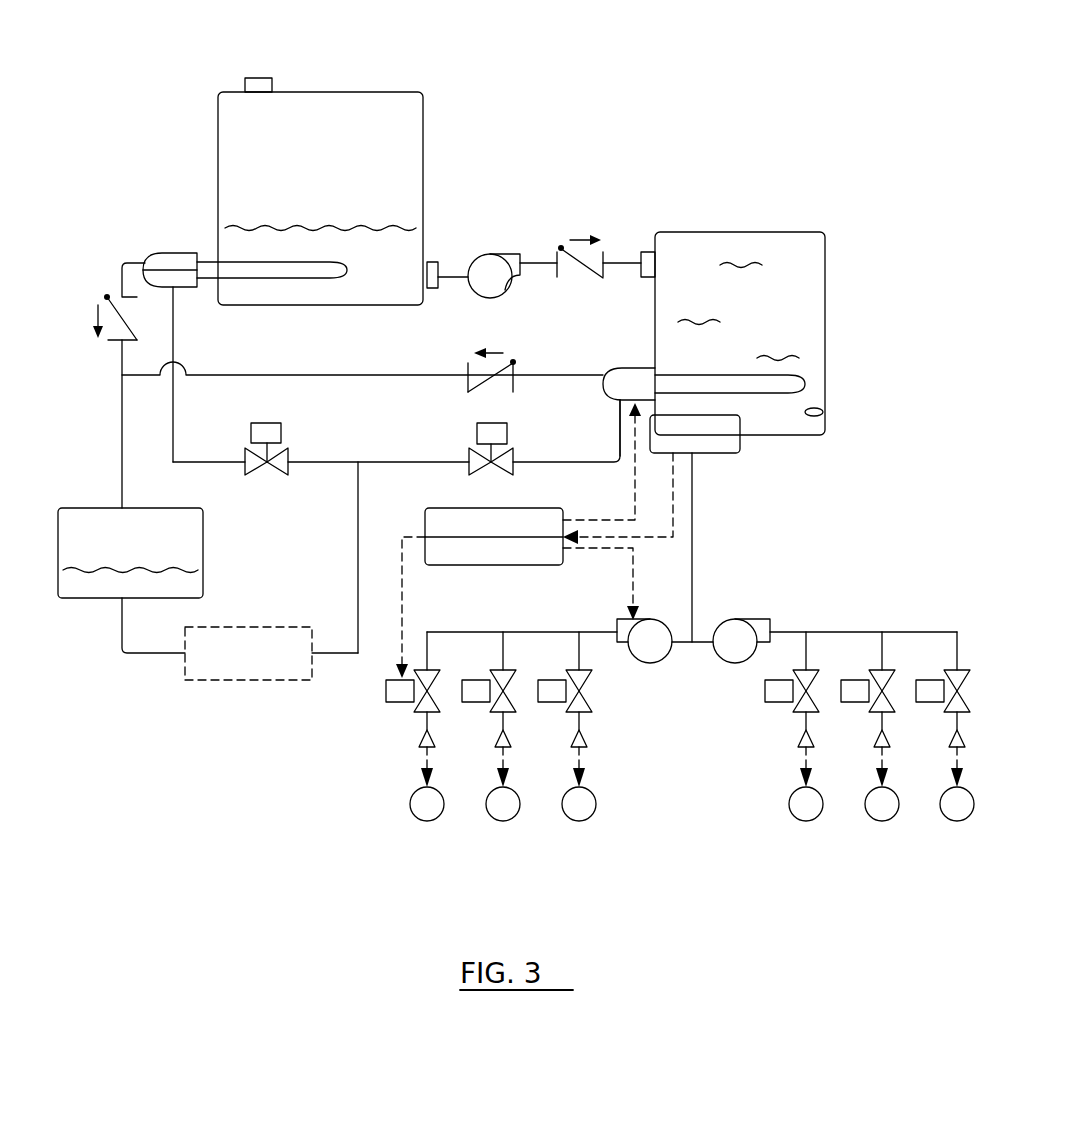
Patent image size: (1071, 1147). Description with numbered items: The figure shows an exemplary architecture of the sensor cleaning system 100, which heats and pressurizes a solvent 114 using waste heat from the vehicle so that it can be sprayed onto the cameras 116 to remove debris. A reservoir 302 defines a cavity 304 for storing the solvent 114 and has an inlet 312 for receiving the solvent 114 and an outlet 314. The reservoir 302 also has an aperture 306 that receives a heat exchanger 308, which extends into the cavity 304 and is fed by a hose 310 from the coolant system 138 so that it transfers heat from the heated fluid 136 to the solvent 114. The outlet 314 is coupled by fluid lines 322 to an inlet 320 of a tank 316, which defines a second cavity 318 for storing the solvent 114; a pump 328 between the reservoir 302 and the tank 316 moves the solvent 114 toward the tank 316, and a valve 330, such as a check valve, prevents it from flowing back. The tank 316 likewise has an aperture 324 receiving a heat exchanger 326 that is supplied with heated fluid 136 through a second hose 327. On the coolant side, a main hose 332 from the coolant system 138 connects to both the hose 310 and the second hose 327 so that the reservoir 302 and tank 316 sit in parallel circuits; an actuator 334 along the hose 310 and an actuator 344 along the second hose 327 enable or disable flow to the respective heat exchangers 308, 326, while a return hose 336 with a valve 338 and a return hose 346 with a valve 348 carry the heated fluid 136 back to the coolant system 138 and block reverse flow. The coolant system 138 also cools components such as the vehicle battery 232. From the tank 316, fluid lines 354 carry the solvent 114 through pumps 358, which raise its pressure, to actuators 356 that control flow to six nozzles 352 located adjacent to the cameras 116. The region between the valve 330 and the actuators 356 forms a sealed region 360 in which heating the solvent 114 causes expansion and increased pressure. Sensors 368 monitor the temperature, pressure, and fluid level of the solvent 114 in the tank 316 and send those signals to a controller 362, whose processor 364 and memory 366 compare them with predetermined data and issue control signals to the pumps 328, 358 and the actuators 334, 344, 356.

The sensor cleaning system 100 is at (855, 157).
The solvent 114 is at (398, 225).
The cameras 116 is at (427, 821).
The heated fluid 136 is at (105, 587).
The coolant system 138 is at (88, 508).
The vehicle battery 232 is at (248, 627).
The reservoir 302 is at (218, 207).
The cavity 304 is at (342, 213).
The aperture 306 is at (200, 257).
The heat exchanger 308 is at (183, 290).
The hose 310 is at (200, 466).
The inlet 312 is at (256, 78).
The outlet 314 is at (443, 262).
The tank 316 is at (825, 345).
The cavity 318 is at (823, 412).
The inlet 320 is at (648, 252).
The fluid lines 322 is at (548, 258).
The aperture 324 is at (650, 366).
The heat exchanger 326 is at (606, 398).
The second hose 327 is at (611, 456).
The pump 328 is at (484, 298).
The valve 330 is at (556, 273).
The main hose 332 is at (358, 563).
The actuator 334 is at (298, 444).
The return hose 336 is at (130, 262).
The valve 338 is at (88, 288).
The actuator 344 is at (463, 444).
The return hose 346 is at (322, 374).
The valve 348 is at (455, 366).
The nozzles 352 is at (410, 735).
The fluid lines 354 is at (692, 568).
The actuators 356 is at (378, 688).
The pumps 358 is at (720, 662).
The sealed region 360 is at (735, 220).
The controller 362 is at (505, 502).
The processor 364 is at (440, 508).
The memory 366 is at (495, 566).
The sensors 368 is at (728, 453).